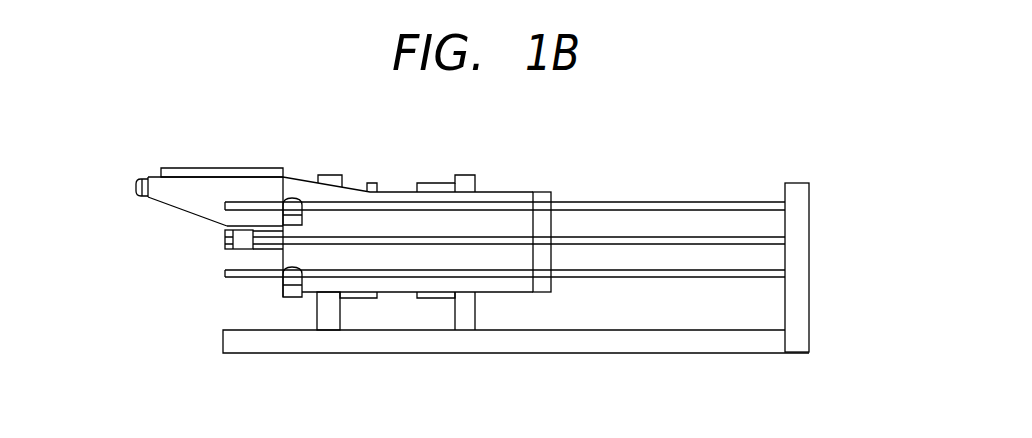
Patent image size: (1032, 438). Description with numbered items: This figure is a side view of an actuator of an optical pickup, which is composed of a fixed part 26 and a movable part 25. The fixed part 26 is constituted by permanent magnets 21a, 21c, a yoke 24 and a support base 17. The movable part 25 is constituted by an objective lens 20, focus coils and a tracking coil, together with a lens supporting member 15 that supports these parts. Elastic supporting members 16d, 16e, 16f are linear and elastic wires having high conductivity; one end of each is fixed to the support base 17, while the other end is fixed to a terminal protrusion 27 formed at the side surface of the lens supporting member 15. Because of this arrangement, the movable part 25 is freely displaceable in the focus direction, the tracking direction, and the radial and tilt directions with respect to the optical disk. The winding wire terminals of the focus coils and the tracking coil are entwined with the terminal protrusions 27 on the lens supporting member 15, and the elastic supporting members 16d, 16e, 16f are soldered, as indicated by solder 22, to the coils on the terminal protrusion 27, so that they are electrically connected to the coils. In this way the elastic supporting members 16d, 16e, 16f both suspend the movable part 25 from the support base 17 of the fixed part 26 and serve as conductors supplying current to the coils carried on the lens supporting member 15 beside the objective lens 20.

The lens supporting member 15 is at (301, 180).
The elastic supporting member 16d is at (614, 202).
The elastic supporting member 16e is at (663, 238).
The elastic supporting member 16f is at (672, 277).
The support base 17 is at (802, 196).
The objective lens 20 is at (199, 173).
The permanent magnet 21a is at (370, 185).
The permanent magnet 21c is at (442, 184).
The solder 22 is at (292, 198).
The yoke 24 is at (333, 315).
The movable part 25 is at (187, 198).
The fixed part 26 is at (715, 340).
The terminal protrusion 27 is at (285, 220).